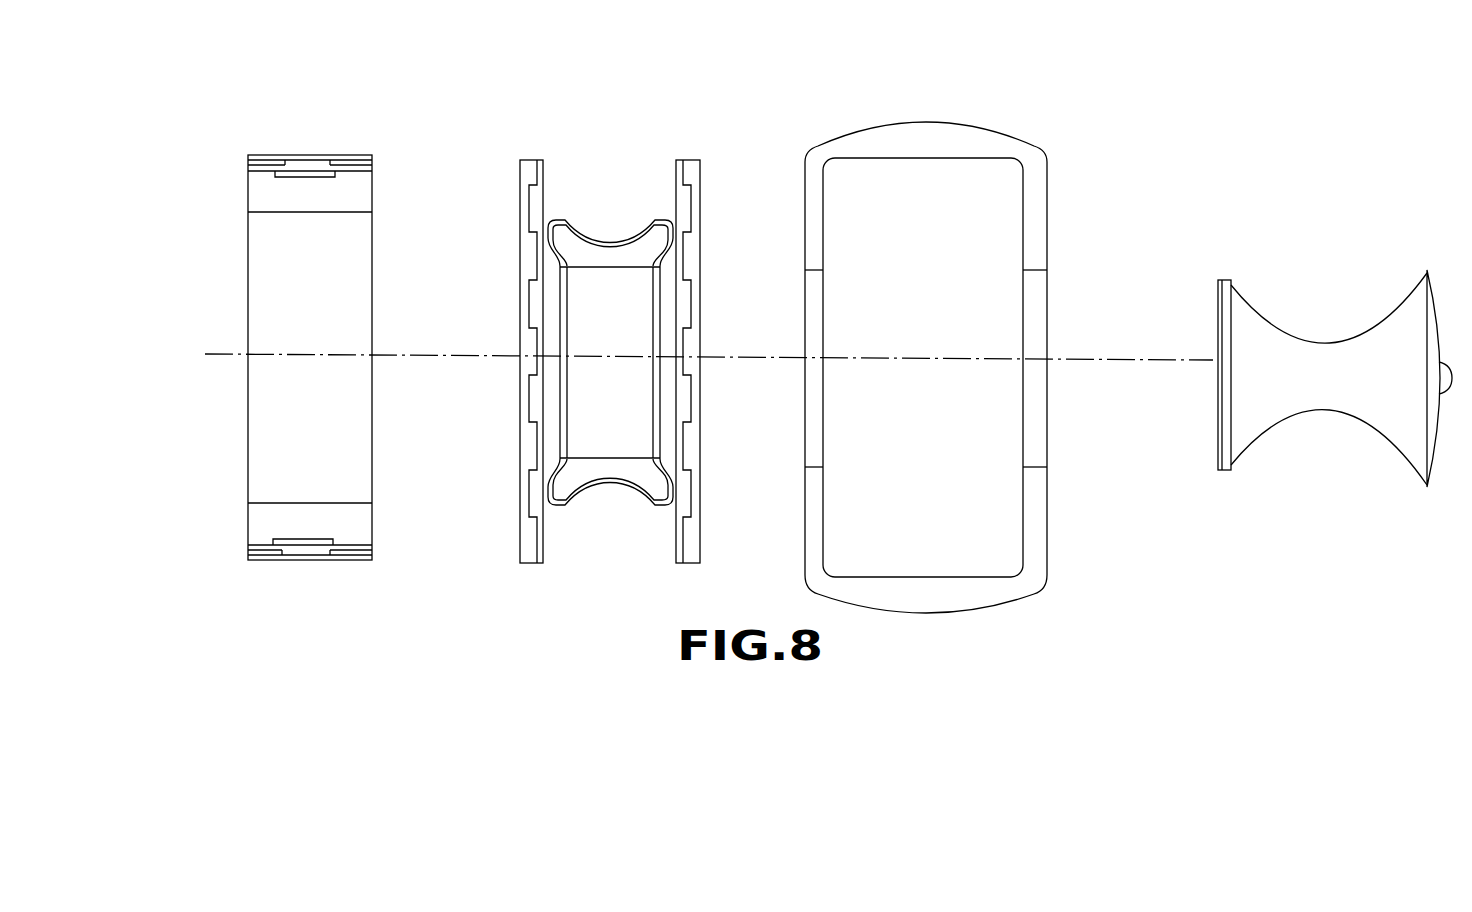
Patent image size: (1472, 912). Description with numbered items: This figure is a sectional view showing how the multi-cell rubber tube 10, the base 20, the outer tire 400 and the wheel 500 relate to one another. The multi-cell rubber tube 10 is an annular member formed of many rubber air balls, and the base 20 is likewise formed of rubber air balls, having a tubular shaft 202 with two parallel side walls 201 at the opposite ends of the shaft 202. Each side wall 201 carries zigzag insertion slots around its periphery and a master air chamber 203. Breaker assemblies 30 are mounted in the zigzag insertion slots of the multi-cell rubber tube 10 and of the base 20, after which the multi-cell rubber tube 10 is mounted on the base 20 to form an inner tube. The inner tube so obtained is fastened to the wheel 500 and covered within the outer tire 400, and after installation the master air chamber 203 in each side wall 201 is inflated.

The multi-cell rubber tube 10 is at (260, 132).
The breaker assemblies 30 is at (250, 170).
The base 20 is at (608, 142).
The side walls 201 is at (530, 228).
The tubular shaft 202 is at (548, 326).
The master air chamber 203 is at (655, 243).
The outer tire 400 is at (918, 142).
The wheel 500 is at (1263, 338).